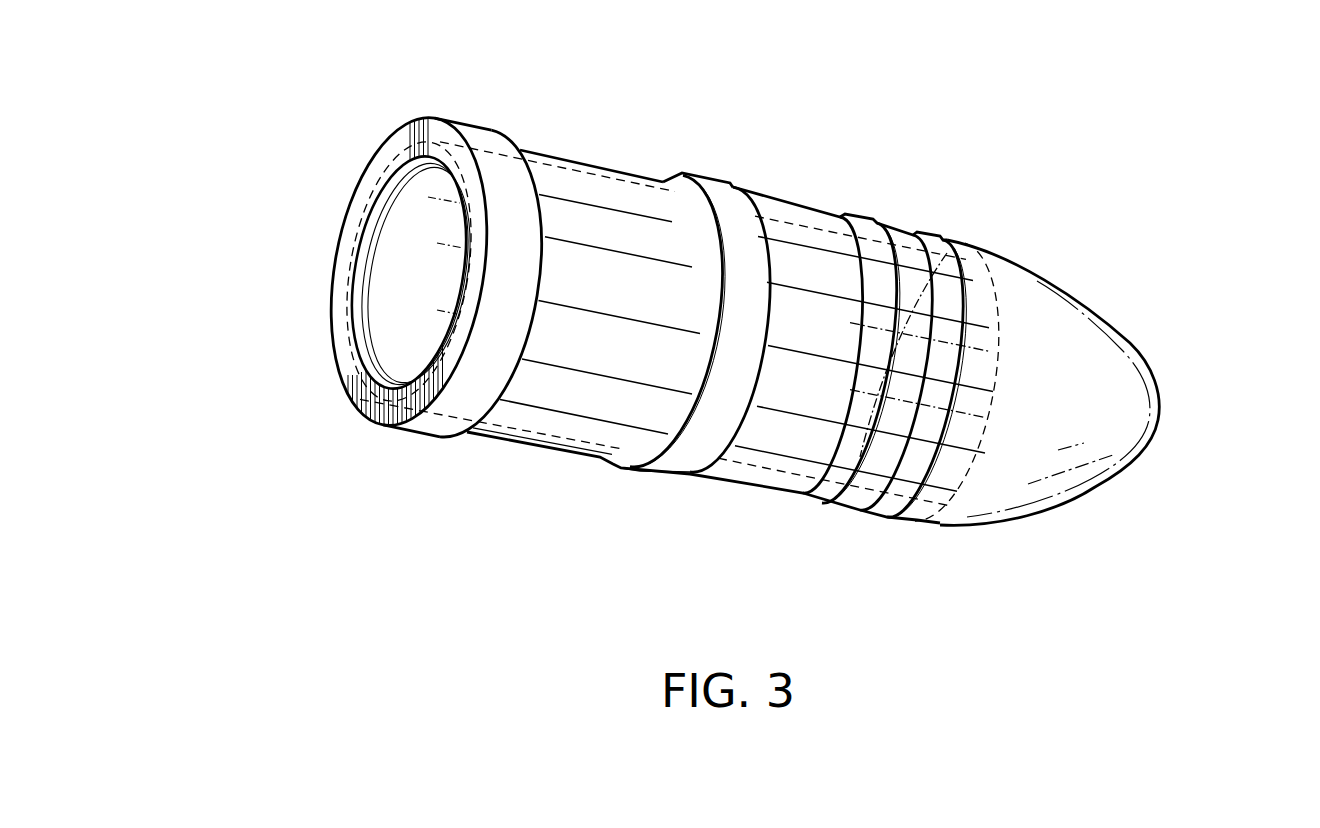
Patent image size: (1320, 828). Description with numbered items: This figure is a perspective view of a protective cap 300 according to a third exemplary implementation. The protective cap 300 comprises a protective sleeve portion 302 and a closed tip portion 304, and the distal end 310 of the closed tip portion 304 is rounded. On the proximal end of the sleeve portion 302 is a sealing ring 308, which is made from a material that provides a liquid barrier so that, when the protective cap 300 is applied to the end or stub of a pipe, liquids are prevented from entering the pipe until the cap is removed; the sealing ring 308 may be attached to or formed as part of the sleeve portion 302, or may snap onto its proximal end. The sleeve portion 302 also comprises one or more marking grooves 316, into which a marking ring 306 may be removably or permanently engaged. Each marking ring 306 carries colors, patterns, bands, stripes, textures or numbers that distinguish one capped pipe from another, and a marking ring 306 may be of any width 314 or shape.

The protective cap 300 is at (701, 336).
The protective sleeve portion 302 is at (655, 336).
The closed tip portion 304 is at (1093, 341).
The marking ring 306 is at (691, 358).
The sealing ring 308 is at (382, 200).
The distal end 310 is at (1127, 413).
The width 314 is at (613, 482).
The marking groove 316 is at (823, 467).